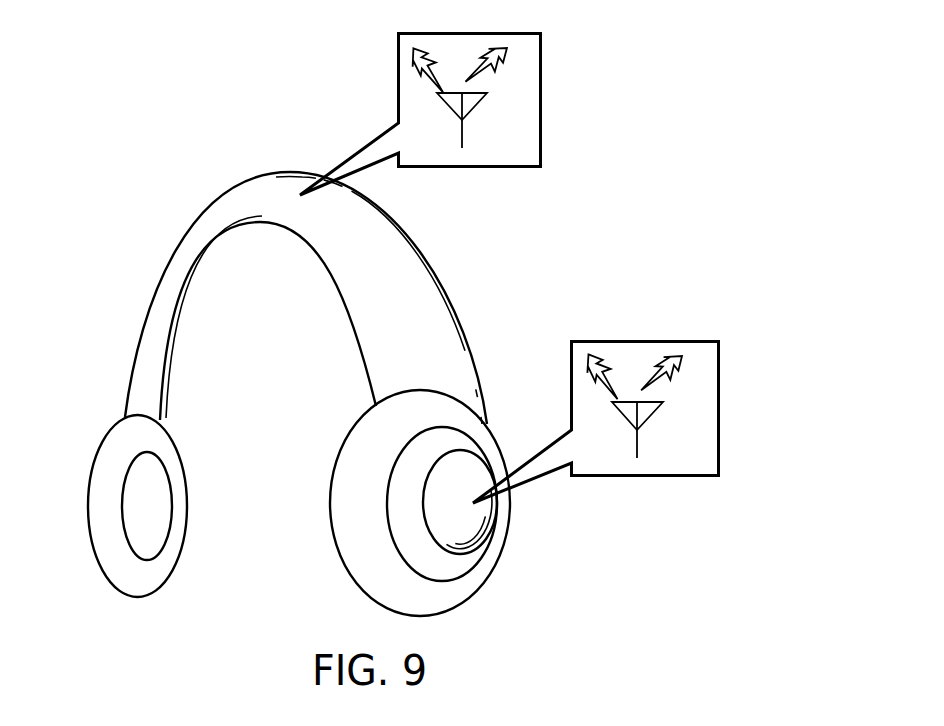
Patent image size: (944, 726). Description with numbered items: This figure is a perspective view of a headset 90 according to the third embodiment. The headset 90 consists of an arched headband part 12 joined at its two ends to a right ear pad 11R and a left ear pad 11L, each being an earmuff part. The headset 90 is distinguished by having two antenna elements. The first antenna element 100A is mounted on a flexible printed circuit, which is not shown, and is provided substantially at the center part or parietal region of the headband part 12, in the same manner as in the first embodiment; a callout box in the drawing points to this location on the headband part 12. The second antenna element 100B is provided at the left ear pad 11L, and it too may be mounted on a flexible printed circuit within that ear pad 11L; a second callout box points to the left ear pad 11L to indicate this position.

The headset 90 is at (279, 368).
The headband part 12 is at (253, 193).
The right ear pad 11R is at (100, 484).
The left ear pad 11L is at (358, 560).
The first antenna element 100A is at (543, 118).
The second antenna element 100B is at (721, 425).